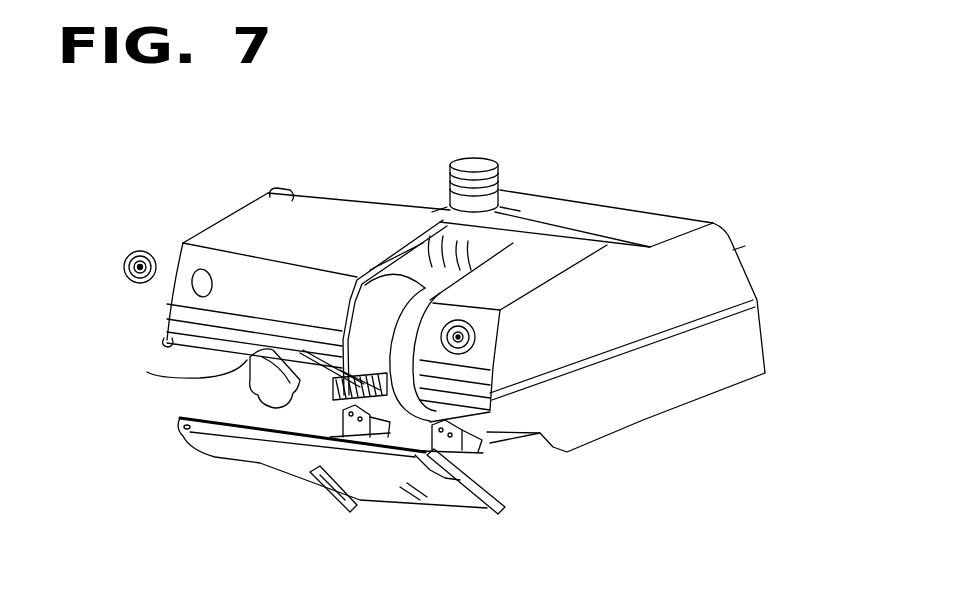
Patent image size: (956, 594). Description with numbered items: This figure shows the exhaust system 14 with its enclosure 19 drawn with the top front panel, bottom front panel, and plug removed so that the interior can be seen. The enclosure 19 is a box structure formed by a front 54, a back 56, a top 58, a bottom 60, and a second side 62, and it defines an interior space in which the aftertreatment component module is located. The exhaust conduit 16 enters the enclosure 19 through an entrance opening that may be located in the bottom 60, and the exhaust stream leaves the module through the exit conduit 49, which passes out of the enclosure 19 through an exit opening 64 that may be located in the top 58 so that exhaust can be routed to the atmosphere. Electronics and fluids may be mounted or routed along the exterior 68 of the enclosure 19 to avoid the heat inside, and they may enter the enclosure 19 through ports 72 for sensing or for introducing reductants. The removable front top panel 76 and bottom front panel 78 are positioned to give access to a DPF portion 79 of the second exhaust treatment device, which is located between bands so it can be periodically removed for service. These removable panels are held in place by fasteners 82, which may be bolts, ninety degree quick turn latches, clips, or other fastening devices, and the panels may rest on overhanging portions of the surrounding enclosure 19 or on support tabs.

The exhaust system 14 is at (697, 100).
The exhaust conduit 16 is at (363, 500).
The enclosure 19 is at (578, 182).
The exit conduit 49 is at (498, 178).
The front 54 is at (148, 410).
The back 56 is at (700, 205).
The top 58 is at (544, 270).
The bottom 60 is at (579, 466).
The second side 62 is at (622, 320).
The exit opening 64 is at (503, 195).
The exterior 68 is at (740, 248).
The ports 72 is at (140, 250).
The front top panel 76 is at (243, 223).
The bottom front panel 78 is at (272, 457).
The DPF portion 79 is at (447, 220).
The fasteners 82 is at (410, 220).